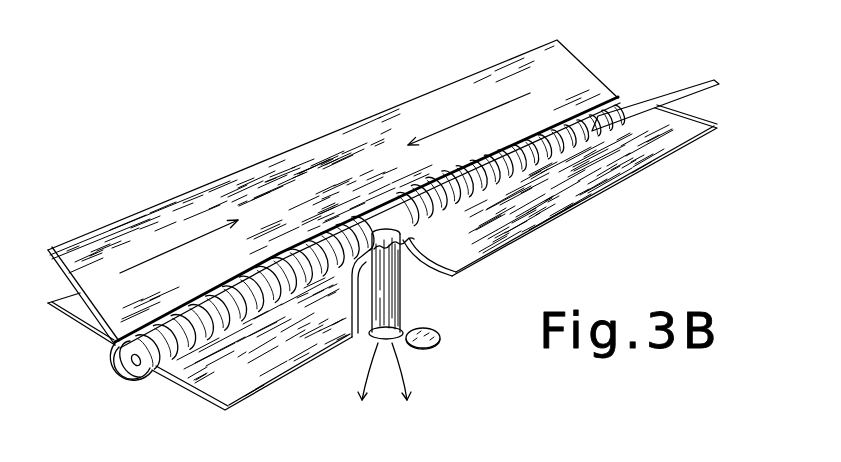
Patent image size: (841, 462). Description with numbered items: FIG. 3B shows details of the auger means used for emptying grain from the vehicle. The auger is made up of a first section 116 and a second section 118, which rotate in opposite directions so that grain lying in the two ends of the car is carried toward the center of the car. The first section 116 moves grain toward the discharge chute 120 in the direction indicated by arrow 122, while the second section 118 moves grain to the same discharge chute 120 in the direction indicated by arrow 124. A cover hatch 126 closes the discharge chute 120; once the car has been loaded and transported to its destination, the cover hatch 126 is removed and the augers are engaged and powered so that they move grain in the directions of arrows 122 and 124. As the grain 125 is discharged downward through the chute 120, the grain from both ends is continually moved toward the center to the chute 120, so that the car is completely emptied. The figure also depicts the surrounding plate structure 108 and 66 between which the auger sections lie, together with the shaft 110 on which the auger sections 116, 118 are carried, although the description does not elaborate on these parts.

The lower plate 66 is at (215, 388).
The upper plate 108 is at (133, 228).
The pin 110 is at (663, 107).
The first section 116 is at (213, 310).
The second section 118 is at (562, 140).
The discharge chute 120 is at (392, 310).
The arrow 122 is at (196, 240).
The arrow 124 is at (470, 118).
The grain 125 is at (390, 372).
The cover hatch 126 is at (440, 332).